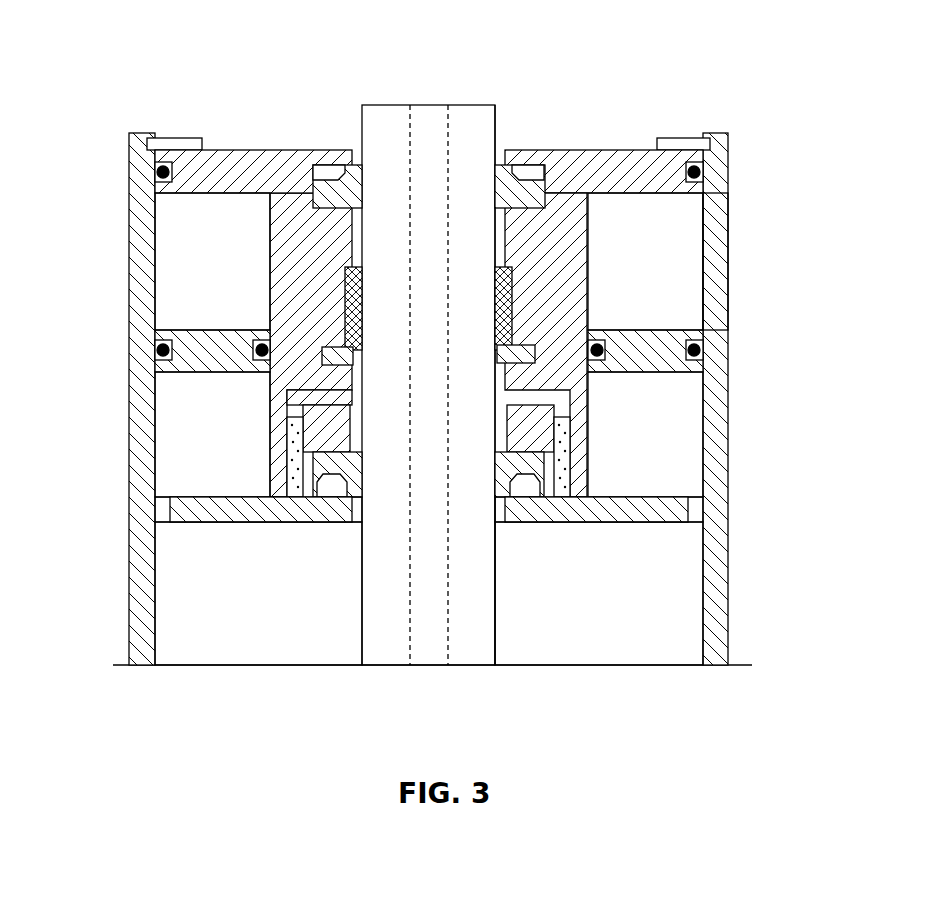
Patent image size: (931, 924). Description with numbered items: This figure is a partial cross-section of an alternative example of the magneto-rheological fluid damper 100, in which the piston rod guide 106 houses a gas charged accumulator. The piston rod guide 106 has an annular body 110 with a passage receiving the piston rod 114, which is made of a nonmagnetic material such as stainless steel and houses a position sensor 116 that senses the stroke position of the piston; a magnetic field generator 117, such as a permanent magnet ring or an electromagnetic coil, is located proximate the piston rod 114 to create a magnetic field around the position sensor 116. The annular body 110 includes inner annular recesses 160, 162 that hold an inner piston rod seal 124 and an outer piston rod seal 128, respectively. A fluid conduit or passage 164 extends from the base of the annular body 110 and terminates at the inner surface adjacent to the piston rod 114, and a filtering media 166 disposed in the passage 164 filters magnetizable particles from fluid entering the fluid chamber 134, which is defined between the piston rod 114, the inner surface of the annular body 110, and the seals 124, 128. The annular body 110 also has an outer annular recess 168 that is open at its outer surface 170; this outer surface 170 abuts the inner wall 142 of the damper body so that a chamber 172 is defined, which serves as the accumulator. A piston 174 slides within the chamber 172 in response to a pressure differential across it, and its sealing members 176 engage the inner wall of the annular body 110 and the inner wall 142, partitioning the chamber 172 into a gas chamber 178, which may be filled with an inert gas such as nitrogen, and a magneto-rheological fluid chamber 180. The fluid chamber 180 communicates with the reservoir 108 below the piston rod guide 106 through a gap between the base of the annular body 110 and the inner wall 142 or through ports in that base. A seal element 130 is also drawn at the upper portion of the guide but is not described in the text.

The magneto-rheological fluid damper 100 is at (466, 68).
The piston rod guide 106 is at (219, 138).
The reservoir 108 is at (617, 592).
The annular body 110 is at (616, 175).
The piston rod 114 is at (496, 127).
The position sensor 116 is at (430, 122).
The magnetic field generator 117 is at (350, 350).
The inner piston rod seal 124 is at (348, 498).
The outer piston rod seal 128 is at (349, 167).
The seal ring 130 is at (514, 267).
The fluid chamber 134 is at (353, 378).
The inner wall of the damper body 142 is at (705, 548).
The inner annular recess 160 is at (330, 440).
The inner annular recess 162 is at (302, 155).
The fluid passage 164 is at (295, 466).
The filtering media 166 is at (287, 427).
The outer annular recess 168 is at (642, 188).
The outer surface of the annular body 170 is at (726, 145).
The chamber 172 is at (698, 277).
The piston 174 is at (690, 365).
The sealing members 176 is at (702, 347).
The gas chamber 178 is at (660, 282).
The magneto-rheological fluid chamber 180 is at (660, 447).